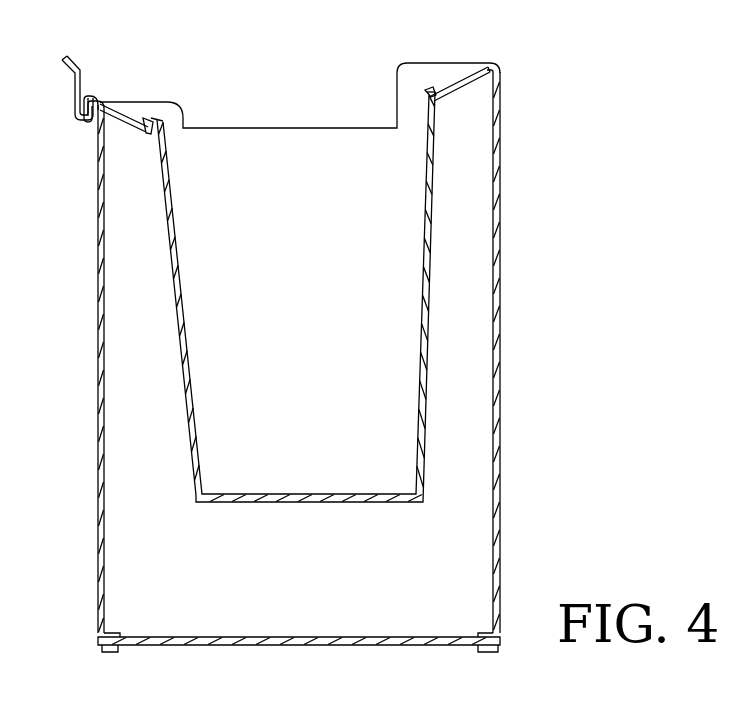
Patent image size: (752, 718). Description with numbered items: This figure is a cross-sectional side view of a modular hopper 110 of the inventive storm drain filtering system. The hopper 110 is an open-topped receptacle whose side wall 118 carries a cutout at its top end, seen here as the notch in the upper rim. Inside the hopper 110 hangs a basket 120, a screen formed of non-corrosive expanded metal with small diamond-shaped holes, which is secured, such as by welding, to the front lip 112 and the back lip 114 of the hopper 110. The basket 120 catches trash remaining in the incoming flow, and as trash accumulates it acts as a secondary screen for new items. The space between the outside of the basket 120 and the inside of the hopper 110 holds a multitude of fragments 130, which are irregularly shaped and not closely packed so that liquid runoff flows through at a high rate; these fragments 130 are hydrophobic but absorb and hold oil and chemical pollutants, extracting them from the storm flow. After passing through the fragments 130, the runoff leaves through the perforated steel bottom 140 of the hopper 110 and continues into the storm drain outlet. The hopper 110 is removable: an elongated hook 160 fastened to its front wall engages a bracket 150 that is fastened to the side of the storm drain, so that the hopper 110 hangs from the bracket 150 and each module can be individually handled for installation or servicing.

The hopper 110 is at (523, 202).
The front lip 112 is at (117, 110).
The back lip 114 is at (455, 78).
The side wall 118 is at (312, 185).
The basket 120 is at (421, 318).
The fragments 130 is at (222, 582).
The perforated steel bottom 140 is at (220, 647).
The bracket 150 is at (72, 58).
The elongated hook 160 is at (88, 130).